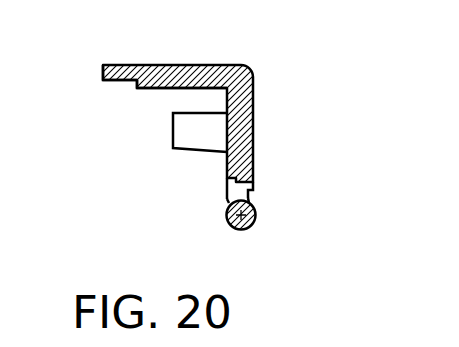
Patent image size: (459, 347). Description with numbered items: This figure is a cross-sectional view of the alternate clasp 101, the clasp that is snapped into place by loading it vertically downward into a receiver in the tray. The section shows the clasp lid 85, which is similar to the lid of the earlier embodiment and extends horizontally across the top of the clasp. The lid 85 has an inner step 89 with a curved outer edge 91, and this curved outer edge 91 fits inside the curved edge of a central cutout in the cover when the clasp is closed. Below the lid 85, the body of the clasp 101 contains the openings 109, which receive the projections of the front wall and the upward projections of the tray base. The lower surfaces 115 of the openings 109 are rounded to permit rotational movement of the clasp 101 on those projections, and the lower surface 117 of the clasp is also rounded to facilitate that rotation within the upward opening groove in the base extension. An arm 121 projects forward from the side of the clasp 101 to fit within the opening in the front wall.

The clasp 101 is at (158, 48).
The lid 85 is at (214, 63).
The curved outer edge 91 is at (137, 87).
The inner step 89 is at (157, 92).
The openings 109 is at (258, 178).
The arms 121 is at (207, 153).
The lower surfaces 115 is at (232, 200).
The lower surface 117 is at (248, 232).